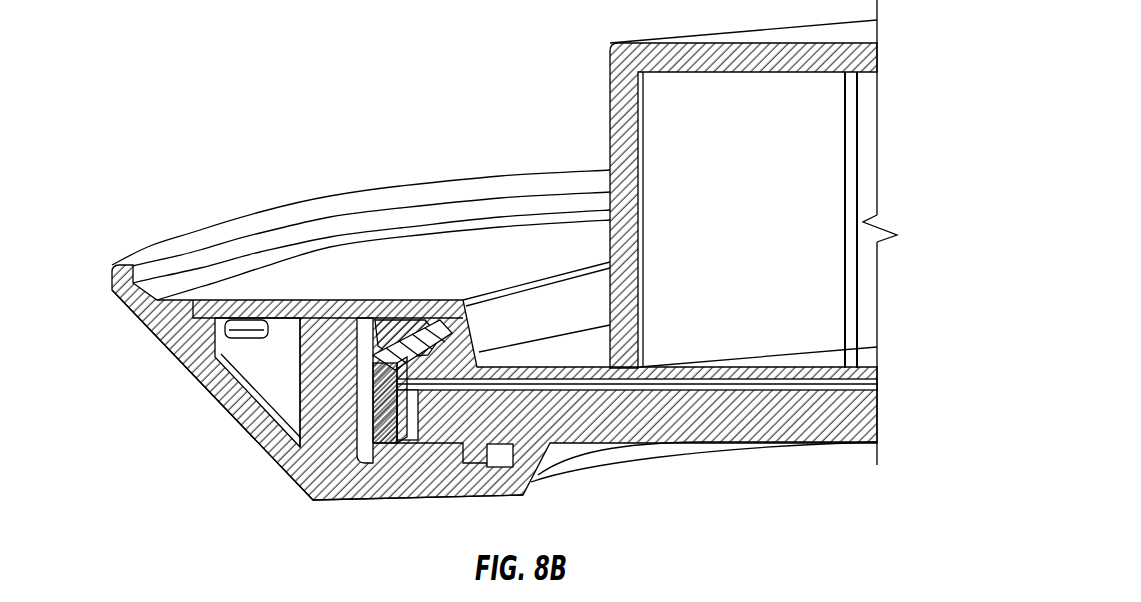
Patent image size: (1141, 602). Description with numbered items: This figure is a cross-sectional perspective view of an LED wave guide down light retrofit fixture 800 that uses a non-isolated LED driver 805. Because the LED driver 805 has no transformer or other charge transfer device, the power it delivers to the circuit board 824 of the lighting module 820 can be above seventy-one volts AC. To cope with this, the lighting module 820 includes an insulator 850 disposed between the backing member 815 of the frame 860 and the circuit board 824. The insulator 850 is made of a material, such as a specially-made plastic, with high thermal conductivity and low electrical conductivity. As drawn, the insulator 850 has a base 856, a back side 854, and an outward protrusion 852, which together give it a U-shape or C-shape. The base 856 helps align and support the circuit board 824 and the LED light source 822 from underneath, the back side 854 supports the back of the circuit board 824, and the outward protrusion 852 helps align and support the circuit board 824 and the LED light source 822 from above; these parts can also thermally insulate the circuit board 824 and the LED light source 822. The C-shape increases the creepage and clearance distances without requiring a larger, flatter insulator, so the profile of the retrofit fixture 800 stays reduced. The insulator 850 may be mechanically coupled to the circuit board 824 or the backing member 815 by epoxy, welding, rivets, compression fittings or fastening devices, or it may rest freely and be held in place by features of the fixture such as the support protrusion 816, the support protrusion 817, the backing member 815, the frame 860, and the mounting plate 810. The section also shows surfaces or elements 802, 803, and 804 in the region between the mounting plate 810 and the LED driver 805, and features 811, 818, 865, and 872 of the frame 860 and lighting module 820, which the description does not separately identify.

The LED wave guide down light retrofit fixture 800 is at (345, 100).
The inner surface 802 is at (520, 267).
The inclined surface 803 is at (573, 315).
The floor surface 804 is at (589, 363).
The non-isolated LED driver 805 is at (622, 106).
The mounting plate 810 is at (387, 265).
The inner wall 811 is at (262, 394).
The backing member 815 is at (333, 440).
The support protrusion 816 is at (478, 455).
The support protrusion 817 is at (530, 478).
The bezel outer edge 818 is at (212, 278).
The lighting module 820 is at (367, 473).
The LED light source 822 is at (407, 405).
The circuit board 824 is at (381, 444).
The insulator 850 is at (348, 397).
The outward protrusion 852 is at (378, 333).
The back side 854 is at (363, 380).
The base 856 is at (430, 455).
The frame 860 is at (268, 435).
The rear plate 865 is at (825, 437).
The flexible circuit 872 is at (436, 330).